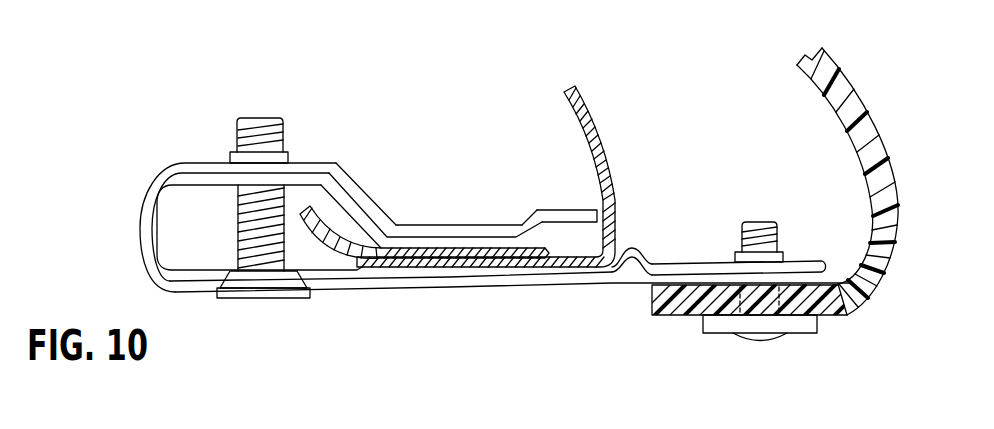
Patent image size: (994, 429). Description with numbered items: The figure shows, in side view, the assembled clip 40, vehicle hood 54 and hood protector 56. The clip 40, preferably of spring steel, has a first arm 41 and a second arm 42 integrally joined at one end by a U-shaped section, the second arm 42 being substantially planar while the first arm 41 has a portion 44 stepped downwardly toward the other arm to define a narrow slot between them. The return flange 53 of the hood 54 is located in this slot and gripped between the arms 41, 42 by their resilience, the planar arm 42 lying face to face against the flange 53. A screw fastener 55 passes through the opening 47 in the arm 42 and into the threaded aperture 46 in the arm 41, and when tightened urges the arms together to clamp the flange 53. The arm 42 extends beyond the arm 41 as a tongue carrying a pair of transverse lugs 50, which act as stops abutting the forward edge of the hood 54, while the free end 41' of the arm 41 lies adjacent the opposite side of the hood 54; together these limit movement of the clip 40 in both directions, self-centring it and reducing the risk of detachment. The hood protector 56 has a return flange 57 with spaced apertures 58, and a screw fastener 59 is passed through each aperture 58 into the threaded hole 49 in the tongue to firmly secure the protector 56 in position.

The clip 40 is at (359, 155).
The first arm 41 is at (431, 197).
The free end of the arm 41' is at (567, 189).
The second arm 42 is at (440, 285).
The stepped portion 44 is at (479, 206).
The threaded aperture 46 is at (290, 138).
The opening 47 is at (228, 272).
The threaded aperture 49 is at (789, 241).
The transverse lugs 50 is at (640, 244).
The return flange 53 is at (518, 266).
The vehicle hood 54 is at (601, 150).
The screw fastener 55 is at (270, 306).
The hood protector 56 is at (841, 65).
The return flange 57 is at (846, 312).
The aperture 58 is at (745, 296).
The screw fastener 59 is at (752, 349).